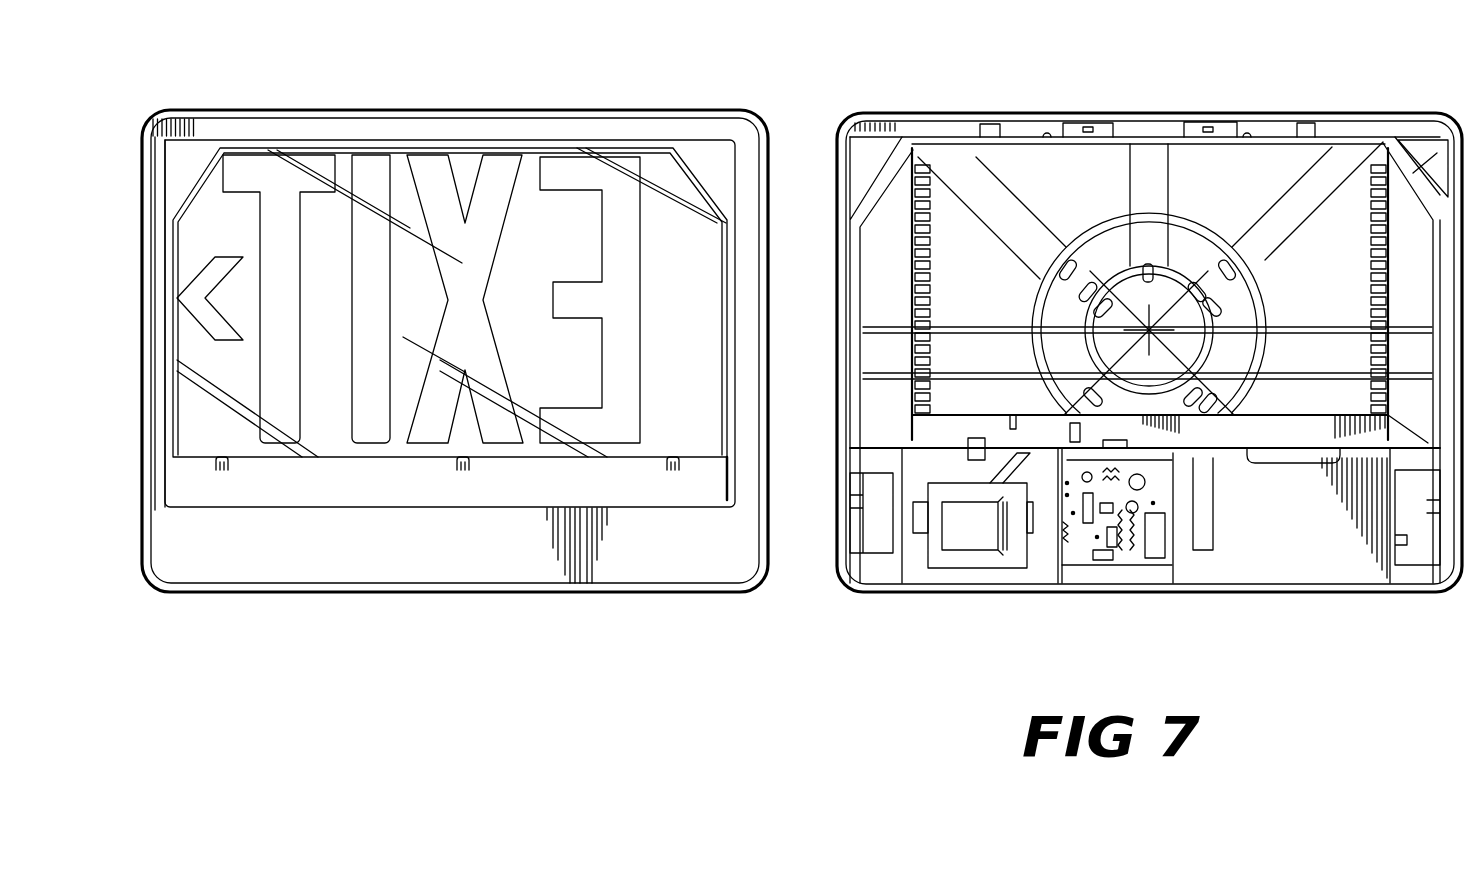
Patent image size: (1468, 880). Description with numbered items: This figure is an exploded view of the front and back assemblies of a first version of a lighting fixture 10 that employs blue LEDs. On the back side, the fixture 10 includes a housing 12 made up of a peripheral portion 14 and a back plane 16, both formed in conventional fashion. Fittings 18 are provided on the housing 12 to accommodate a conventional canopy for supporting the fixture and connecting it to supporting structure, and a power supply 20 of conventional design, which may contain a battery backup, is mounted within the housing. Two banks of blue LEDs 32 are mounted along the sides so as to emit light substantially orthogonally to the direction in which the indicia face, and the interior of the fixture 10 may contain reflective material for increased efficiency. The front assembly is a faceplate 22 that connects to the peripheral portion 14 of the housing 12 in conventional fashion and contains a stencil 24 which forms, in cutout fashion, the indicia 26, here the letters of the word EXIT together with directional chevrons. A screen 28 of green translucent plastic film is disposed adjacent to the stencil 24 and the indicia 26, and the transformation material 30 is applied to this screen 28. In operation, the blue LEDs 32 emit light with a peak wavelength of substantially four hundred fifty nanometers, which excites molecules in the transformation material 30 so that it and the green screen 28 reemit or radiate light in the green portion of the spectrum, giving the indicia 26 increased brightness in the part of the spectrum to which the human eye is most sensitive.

The fixture 10 is at (1283, 72).
The housing 12 is at (994, 98).
The peripheral portion 14 is at (1045, 112).
The back plane 16 is at (1096, 201).
The fittings 18 is at (1106, 125).
The power supply 20 is at (957, 537).
The faceplate 22 is at (475, 564).
The stencil 24 is at (553, 160).
The indicia 26 is at (432, 160).
The screen 28 is at (702, 250).
The transformation material 30 is at (700, 323).
The blue LEDs 32 is at (928, 150).